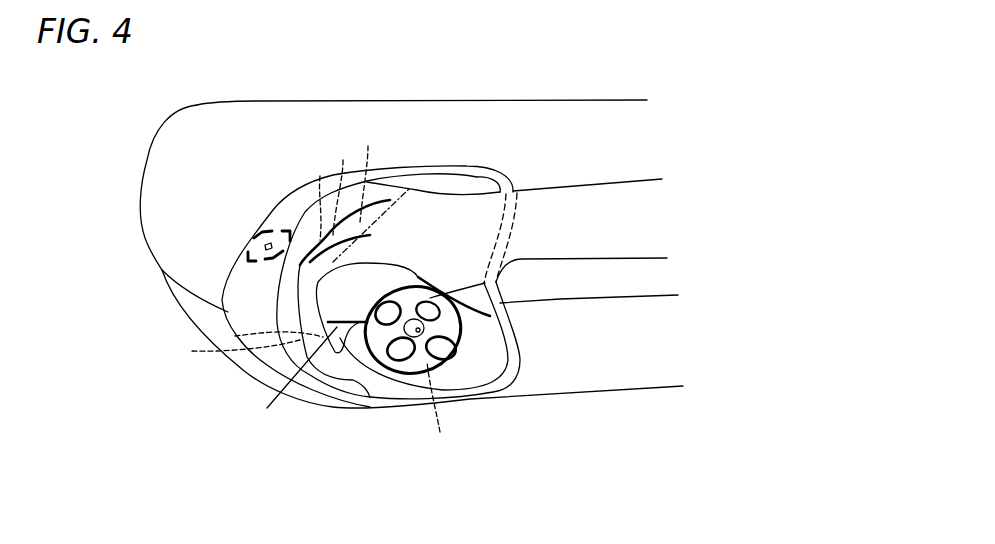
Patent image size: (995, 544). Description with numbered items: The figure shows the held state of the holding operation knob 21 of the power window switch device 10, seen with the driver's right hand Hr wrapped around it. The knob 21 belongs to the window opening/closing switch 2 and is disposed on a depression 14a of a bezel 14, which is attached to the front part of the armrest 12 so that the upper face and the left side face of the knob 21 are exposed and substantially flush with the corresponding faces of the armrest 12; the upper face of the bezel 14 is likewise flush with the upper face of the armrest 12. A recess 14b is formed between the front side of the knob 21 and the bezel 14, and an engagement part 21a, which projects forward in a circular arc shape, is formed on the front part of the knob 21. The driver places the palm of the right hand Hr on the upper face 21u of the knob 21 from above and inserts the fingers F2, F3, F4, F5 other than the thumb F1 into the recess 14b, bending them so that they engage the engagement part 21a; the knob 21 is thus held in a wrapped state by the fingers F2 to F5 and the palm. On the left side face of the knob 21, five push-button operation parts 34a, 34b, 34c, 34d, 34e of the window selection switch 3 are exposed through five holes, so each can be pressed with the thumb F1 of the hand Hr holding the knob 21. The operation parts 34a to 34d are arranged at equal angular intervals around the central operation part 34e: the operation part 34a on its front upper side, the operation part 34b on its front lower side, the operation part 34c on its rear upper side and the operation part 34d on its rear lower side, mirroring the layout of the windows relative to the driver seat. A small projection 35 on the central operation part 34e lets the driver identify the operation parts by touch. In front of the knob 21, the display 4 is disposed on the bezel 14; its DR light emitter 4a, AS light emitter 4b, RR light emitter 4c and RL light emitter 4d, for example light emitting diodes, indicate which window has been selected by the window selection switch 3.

The window opening/closing switch 2 is at (350, 404).
The holding operation knob 21 is at (430, 340).
The window selection switch 3 is at (490, 395).
The display 4 is at (247, 243).
The DR light emitter 4a is at (257, 239).
The AS light emitter 4b is at (245, 260).
The RR light emitter 4c is at (288, 232).
The RL light emitter 4d is at (267, 263).
The power window switch device 10 is at (380, 428).
The armrest 12 is at (533, 100).
The bezel 14 is at (240, 327).
The depression 14a is at (290, 393).
The recess 14b is at (258, 364).
The engagement part 21a is at (333, 291).
The upper face 21u is at (453, 188).
The operation part 34a is at (360, 333).
The operation part 34b is at (405, 380).
The operation part 34c is at (440, 310).
The operation part 34d is at (453, 382).
The operation part 34e is at (450, 350).
The small projection 35 is at (425, 326).
The thumb F1 is at (441, 408).
The finger F2 is at (245, 346).
The finger F3 is at (317, 199).
The finger F4 is at (341, 189).
The finger F5 is at (367, 175).
The right hand Hr is at (583, 184).